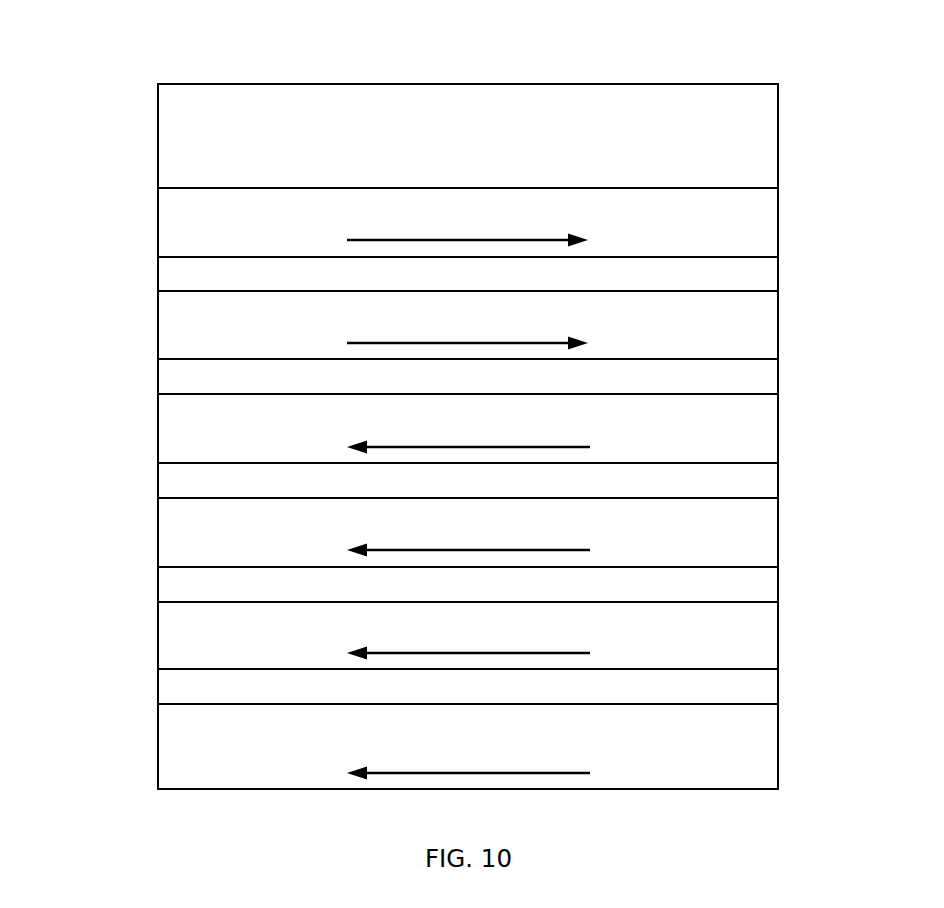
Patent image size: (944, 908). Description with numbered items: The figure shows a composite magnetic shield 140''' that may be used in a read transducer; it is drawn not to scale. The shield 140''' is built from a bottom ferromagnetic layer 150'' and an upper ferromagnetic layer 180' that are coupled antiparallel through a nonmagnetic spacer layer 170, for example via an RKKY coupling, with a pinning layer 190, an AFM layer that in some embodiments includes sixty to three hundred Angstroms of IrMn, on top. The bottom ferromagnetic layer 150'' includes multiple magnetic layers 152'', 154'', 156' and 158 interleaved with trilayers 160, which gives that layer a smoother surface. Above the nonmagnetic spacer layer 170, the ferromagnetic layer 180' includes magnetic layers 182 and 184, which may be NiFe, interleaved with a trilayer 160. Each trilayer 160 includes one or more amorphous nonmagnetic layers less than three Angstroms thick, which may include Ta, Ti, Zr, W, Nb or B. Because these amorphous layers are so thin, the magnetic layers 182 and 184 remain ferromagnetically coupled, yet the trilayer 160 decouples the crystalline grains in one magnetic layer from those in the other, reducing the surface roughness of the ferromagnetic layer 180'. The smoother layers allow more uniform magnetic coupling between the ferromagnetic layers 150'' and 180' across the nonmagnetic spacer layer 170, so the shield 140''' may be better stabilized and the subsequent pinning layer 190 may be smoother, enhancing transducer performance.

The magnetic shield 140''' is at (468, 411).
The ferromagnetic layer 180' is at (405, 221).
The pinning layer 190 is at (158, 137).
The magnetic layer 184 is at (158, 219).
The magnetic layer 182 is at (158, 333).
The trilayer 160 is at (778, 268).
The nonmagnetic spacer layer 170 is at (778, 377).
The magnetic layer 158 is at (158, 429).
The magnetic layer 156' is at (423, 524).
The magnetic layer 154'' is at (416, 627).
The magnetic layer 152'' is at (485, 771).
The ferromagnetic layer 150'' is at (404, 591).